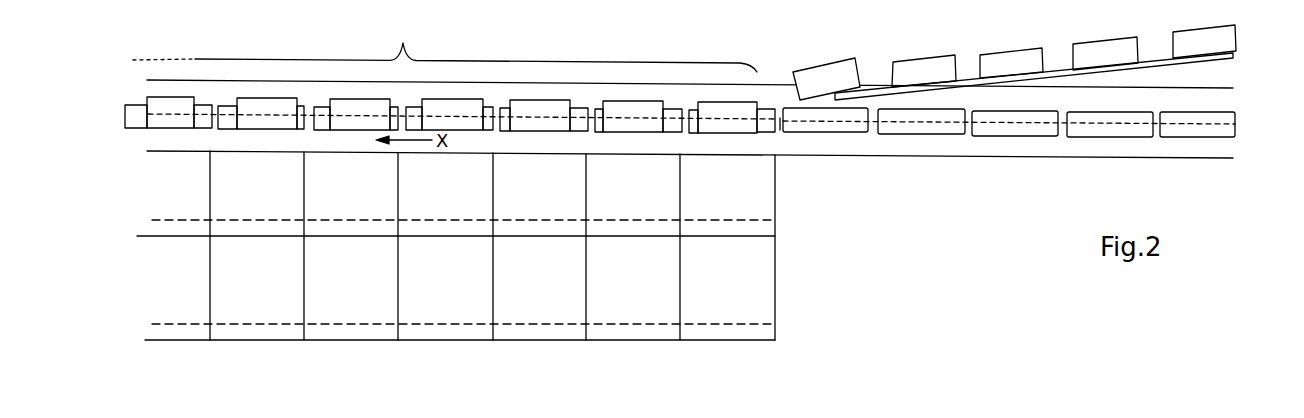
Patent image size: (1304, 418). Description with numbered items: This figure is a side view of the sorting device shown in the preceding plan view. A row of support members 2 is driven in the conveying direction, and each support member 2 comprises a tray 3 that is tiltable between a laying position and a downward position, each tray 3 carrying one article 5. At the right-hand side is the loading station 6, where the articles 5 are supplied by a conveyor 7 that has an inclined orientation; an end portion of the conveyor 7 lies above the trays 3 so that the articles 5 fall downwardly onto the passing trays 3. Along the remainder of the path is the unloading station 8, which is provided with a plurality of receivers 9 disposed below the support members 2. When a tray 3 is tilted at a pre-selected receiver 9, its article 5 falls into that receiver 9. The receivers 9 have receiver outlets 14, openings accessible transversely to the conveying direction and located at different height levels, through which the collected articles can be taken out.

The support member 2 is at (832, 138).
The tray 3 is at (778, 122).
The article 5 is at (743, 122).
The loading station 6 is at (855, 50).
The conveyor 7 is at (1005, 85).
The unloading station 8 is at (476, 42).
The receiver 9 is at (743, 333).
The receiver outlet 14 is at (648, 333).